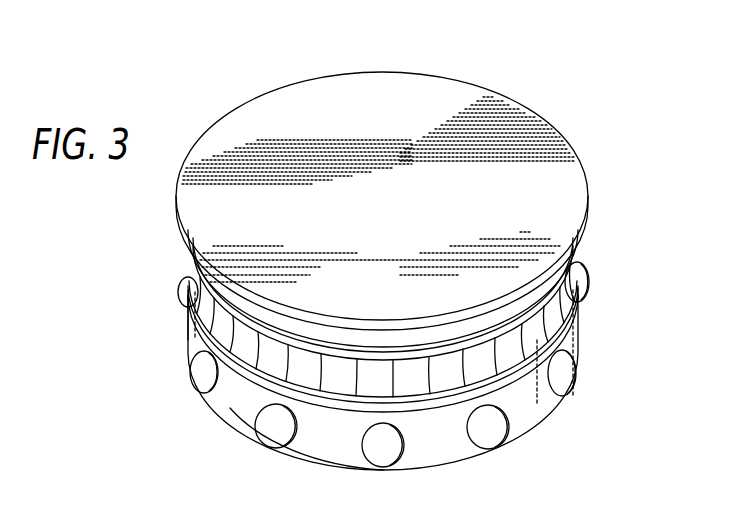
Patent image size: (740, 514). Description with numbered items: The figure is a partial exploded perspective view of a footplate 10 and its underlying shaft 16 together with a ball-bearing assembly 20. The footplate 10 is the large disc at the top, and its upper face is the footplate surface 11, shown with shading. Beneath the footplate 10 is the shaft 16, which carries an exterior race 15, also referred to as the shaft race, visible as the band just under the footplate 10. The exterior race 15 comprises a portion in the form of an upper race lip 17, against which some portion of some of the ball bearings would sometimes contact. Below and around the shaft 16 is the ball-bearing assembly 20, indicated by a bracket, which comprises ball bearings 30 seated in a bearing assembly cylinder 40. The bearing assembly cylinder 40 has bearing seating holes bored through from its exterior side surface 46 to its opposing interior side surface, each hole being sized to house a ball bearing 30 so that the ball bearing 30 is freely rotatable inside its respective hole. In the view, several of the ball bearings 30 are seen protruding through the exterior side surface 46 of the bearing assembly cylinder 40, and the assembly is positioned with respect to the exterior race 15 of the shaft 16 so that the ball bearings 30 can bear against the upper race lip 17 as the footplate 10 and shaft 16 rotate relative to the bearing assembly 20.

The footplate 10 is at (226, 134).
The footplate surface 11 is at (505, 133).
The exterior race 15 is at (542, 318).
The shaft 16 is at (562, 298).
The upper race lip 17 is at (358, 380).
The ball-bearing assembly 20 is at (160, 292).
The ball bearings 30 is at (562, 375).
The bearing assembly cylinder 40 is at (538, 408).
The exterior side surface 46 is at (437, 457).